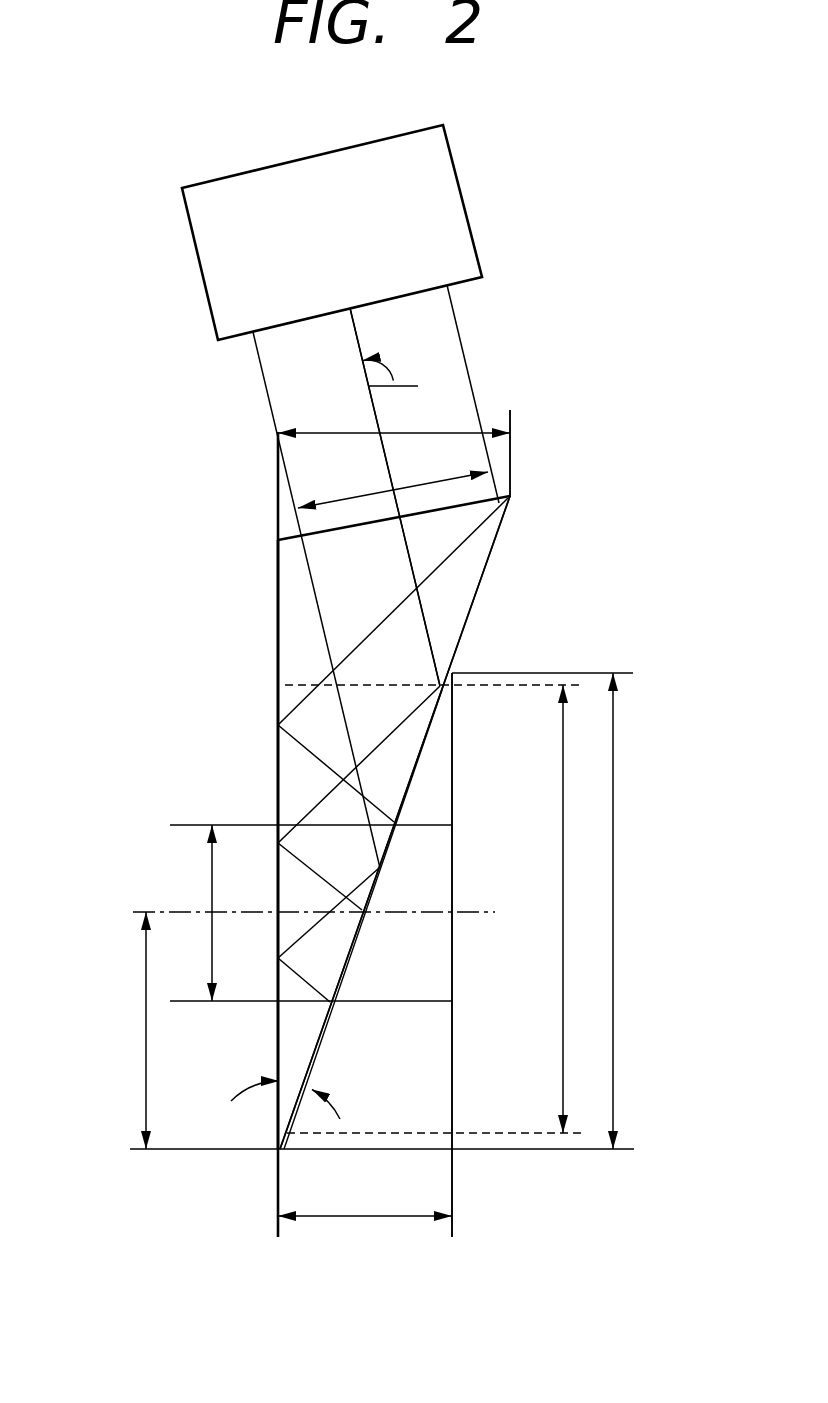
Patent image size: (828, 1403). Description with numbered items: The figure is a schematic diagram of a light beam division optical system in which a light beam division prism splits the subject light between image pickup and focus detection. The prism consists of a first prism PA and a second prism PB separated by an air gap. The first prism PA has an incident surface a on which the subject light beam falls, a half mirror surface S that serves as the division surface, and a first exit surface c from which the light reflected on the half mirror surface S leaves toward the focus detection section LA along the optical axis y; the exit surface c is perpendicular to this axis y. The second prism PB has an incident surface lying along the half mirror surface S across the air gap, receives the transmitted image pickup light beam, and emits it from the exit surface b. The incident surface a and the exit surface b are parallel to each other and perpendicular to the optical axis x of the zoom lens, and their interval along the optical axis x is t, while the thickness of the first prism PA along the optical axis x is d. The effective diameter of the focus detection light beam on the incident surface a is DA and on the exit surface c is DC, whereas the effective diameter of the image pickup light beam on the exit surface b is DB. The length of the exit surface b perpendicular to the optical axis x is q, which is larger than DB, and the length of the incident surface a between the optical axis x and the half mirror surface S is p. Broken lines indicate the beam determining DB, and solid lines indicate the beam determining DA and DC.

The focus detection section LA is at (332, 232).
The first prism PA is at (292, 624).
The second prism PB is at (430, 1105).
The incident surface a is at (278, 575).
The exit surface b is at (452, 744).
The first exit surface c is at (508, 481).
The half mirror surface S is at (473, 598).
The thickness of prism PA d is at (394, 414).
The effective diameter on exit surface c DC is at (393, 474).
The effective diameter on incident surface a DA is at (186, 913).
The effective diameter on exit surface b DB is at (539, 909).
The optical axis of the zoom lens x is at (314, 894).
The optical axis of divisional light beam y is at (386, 497).
The length of incident surface a p is at (131, 1030).
The length of exit surface b q is at (601, 911).
The interval between incident surface a and exit surface b t is at (365, 1195).